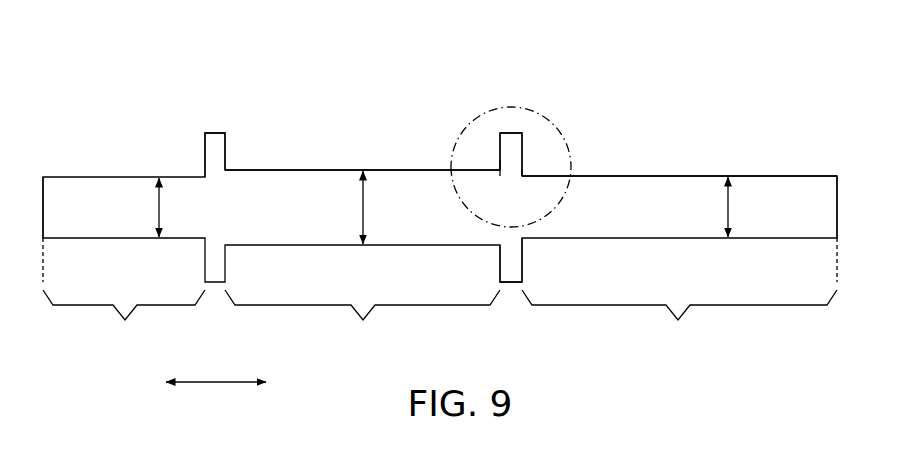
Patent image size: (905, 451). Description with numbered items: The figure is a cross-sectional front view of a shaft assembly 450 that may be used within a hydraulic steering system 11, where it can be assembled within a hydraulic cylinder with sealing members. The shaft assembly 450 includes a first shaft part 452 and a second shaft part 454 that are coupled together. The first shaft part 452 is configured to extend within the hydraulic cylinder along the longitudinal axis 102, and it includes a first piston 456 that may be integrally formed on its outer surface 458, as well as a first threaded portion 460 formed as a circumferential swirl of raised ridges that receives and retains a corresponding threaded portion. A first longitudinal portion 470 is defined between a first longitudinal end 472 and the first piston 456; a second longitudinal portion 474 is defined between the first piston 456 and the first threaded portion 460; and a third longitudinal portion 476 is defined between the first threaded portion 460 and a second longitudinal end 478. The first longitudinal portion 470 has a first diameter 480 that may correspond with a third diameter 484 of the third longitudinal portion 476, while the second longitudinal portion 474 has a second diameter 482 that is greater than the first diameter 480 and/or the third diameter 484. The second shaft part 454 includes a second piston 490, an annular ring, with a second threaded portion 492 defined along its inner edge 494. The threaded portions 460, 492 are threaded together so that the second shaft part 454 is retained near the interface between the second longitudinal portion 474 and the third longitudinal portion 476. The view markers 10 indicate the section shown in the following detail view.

The hydraulic steering system 11 is at (692, 50).
The shaft assembly 450 is at (478, 70).
The second piston 490 is at (510, 133).
The second shaft part 454 is at (520, 123).
The viewing direction 10 is at (457, 134).
The first longitudinal end 472 is at (42, 162).
The first piston 456 is at (208, 122).
The first shaft part 452 is at (275, 160).
The second longitudinal end 478 is at (831, 162).
The inner edge 494 is at (498, 171).
The first threaded portion 460 is at (524, 174).
The first diameter 480 is at (157, 207).
The second diameter 482 is at (361, 207).
The second threaded portion 492 is at (504, 174).
The third diameter 484 is at (732, 206).
The outer surface 458 is at (412, 234).
The first longitudinal portion 470 is at (124, 319).
The second longitudinal portion 474 is at (362, 319).
The third longitudinal portion 476 is at (679, 319).
The longitudinal axis 102 is at (218, 382).